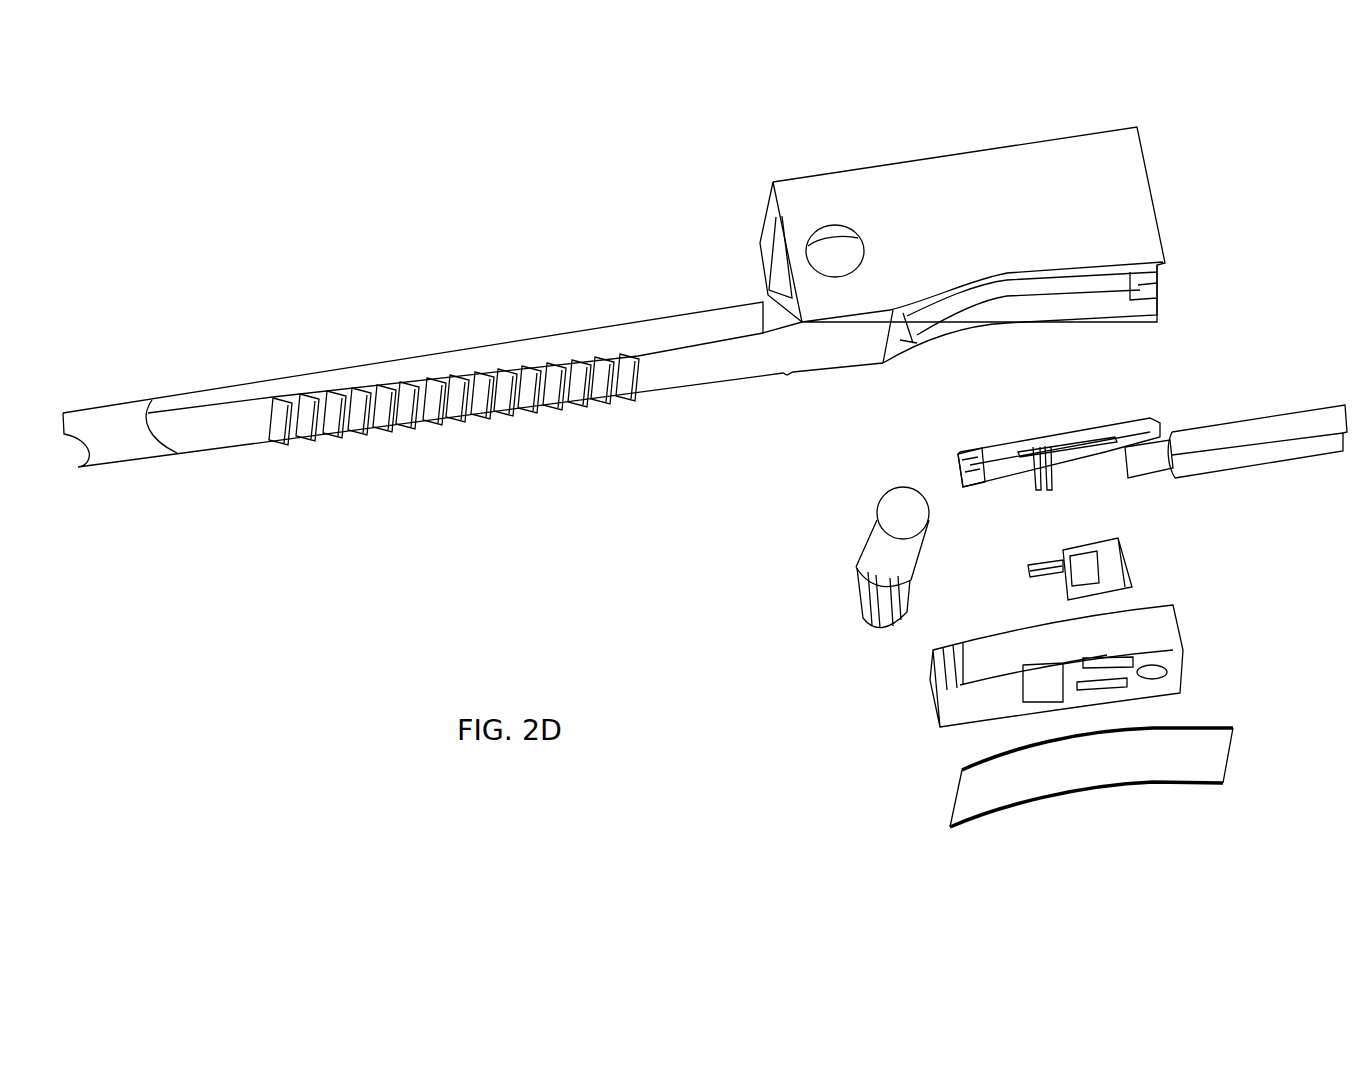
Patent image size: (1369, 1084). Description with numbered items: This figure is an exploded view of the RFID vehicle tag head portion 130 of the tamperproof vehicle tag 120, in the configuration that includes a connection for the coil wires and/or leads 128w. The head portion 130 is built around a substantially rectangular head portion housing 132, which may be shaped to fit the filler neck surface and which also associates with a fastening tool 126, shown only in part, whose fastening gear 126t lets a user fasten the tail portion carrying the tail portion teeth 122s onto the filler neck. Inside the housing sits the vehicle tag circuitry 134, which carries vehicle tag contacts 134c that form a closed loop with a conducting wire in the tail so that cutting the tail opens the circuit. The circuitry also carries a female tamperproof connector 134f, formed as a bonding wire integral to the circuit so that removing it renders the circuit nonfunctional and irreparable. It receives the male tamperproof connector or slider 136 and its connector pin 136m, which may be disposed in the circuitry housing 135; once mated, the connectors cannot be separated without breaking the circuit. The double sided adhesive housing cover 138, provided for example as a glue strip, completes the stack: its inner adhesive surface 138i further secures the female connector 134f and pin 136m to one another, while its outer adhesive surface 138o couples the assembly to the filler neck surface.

The tamperproof vehicle tag 120 is at (473, 340).
The tail portion teeth 122s is at (454, 457).
The RFID vehicle tag head portion 130 is at (953, 236).
The head portion housing 132 is at (1006, 216).
The coil wires and/or leads 128w is at (1257, 399).
The vehicle tag circuitry 134 is at (1013, 509).
The vehicle tag contacts 134c is at (958, 526).
The vehicle tag circuitry female tamperproof connector 134f is at (1099, 485).
The fastening tool 126 is at (818, 544).
The fastening gear 126t is at (808, 585).
The vehicle tag circuitry male tamperproof connector or slider 136 is at (1116, 551).
The vehicle tag circuitry male tamperproof connector pin 136m is at (1012, 540).
The circuitry housing 135 is at (1125, 666).
The double sided adhesive housing cover 138 is at (1017, 812).
The inner (second) adhesive surface 138i is at (1028, 756).
The outer (first) adhesive surface 138o is at (1086, 839).